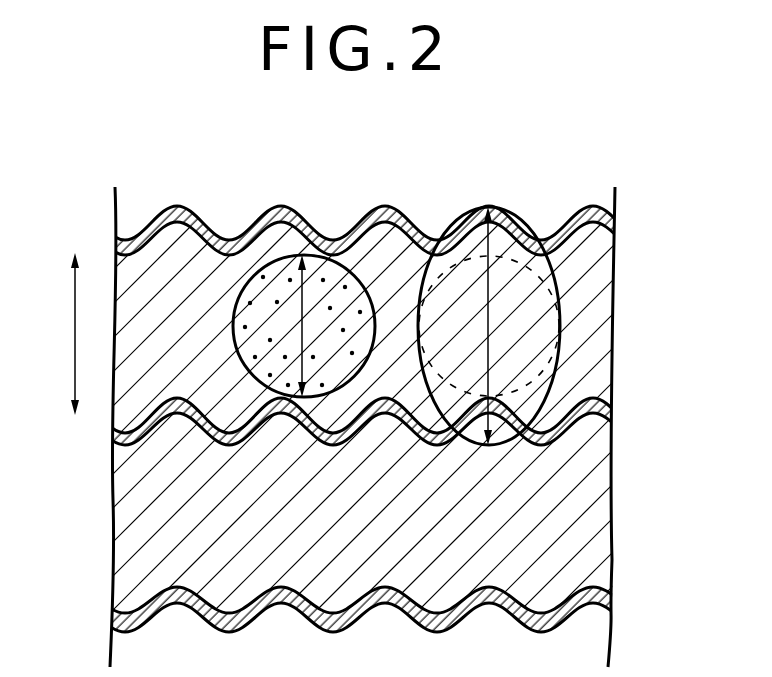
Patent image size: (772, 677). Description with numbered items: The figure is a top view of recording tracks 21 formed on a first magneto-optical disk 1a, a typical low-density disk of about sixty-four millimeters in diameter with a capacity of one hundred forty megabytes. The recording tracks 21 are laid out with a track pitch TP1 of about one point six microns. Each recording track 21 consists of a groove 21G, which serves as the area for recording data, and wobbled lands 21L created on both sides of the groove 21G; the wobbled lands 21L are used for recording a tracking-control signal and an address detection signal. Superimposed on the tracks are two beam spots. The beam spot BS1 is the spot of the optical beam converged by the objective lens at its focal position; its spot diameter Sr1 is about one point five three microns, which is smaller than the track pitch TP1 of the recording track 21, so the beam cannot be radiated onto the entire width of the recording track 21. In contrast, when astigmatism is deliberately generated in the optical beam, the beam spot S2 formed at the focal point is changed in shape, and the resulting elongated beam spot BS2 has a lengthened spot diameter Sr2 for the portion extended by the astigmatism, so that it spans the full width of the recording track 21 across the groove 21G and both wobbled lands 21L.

The recording track 21 is at (386, 408).
The groove 21G is at (143, 263).
The wobbled land 21L is at (360, 415).
The first magneto-optical disk 1a is at (138, 578).
The beam spot BS1 is at (336, 270).
The beam spot BS2 is at (540, 332).
The beam spot S2 is at (528, 226).
The spot diameter Sr1 is at (304, 326).
The lengthened spot diameter Sr2 is at (492, 326).
The track pitch TP1 is at (52, 334).